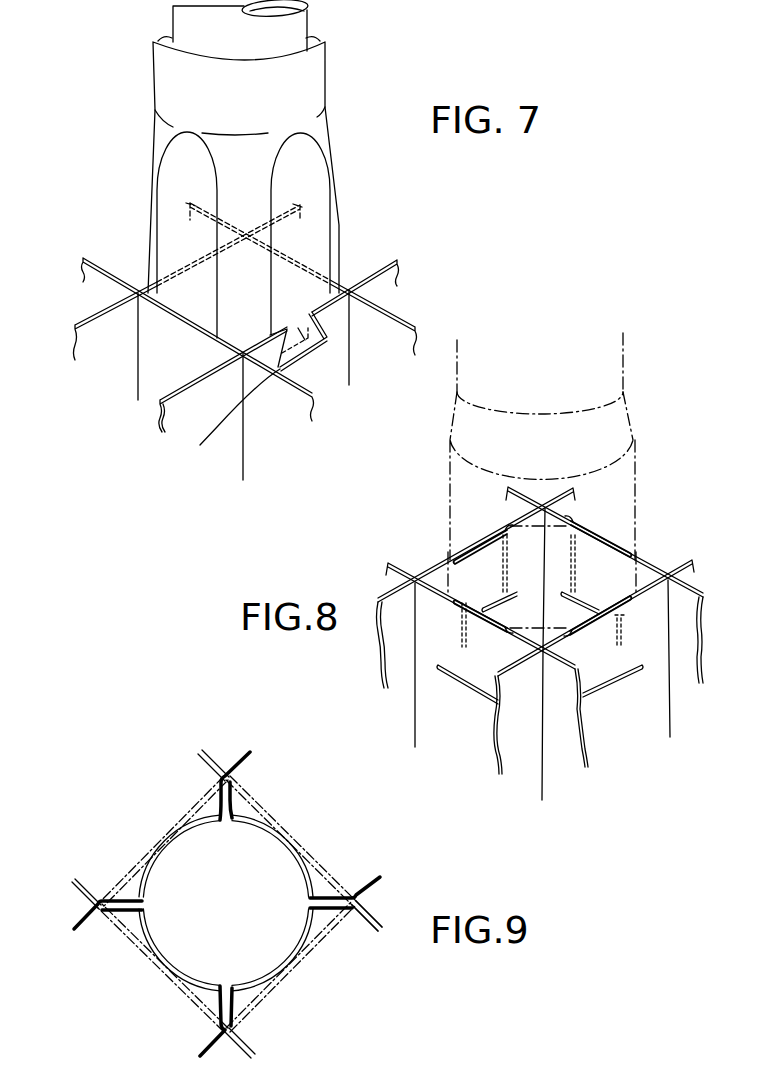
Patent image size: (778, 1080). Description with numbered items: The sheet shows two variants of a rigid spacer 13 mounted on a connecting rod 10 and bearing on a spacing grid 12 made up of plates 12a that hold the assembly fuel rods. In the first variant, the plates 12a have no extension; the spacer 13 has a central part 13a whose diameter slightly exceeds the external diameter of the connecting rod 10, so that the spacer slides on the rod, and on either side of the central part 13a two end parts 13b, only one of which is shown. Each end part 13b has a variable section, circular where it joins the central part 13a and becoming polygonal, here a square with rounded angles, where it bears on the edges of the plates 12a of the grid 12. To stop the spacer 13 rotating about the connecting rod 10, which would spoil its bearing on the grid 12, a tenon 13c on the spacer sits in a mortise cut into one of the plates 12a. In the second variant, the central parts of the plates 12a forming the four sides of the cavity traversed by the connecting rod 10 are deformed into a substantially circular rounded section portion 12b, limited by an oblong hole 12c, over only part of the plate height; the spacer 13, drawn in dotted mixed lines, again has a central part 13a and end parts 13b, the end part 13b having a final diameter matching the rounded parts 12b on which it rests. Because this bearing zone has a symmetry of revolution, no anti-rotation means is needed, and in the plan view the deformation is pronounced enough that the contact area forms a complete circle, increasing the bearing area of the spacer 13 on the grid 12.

In FIG. 7, the connecting rod 10 is at (305, 25).
In FIG. 7, the grid 12 is at (86, 304).
In FIG. 8, the grid 12 is at (514, 728).
In FIG. 9, the grid 12 is at (95, 862).
In FIG. 7, the plates 12a is at (194, 385).
In FIG. 9, the plates 12a is at (352, 913).
In FIG. 8, the rounded section portion 12b is at (594, 660).
In FIG. 9, the rounded section portion 12b is at (279, 836).
In FIG. 8, the oblong hole 12c is at (626, 678).
In FIG. 7, the rigid spacer 13 is at (261, 261).
In FIG. 8, the rigid spacer 13 is at (551, 480).
In FIG. 7, the central part 13a is at (305, 88).
In FIG. 8, the central part 13a is at (620, 372).
In FIG. 7, the end part 13b is at (336, 222).
In FIG. 8, the end part 13b is at (635, 510).
In FIG. 7, the tenon 13c is at (305, 333).